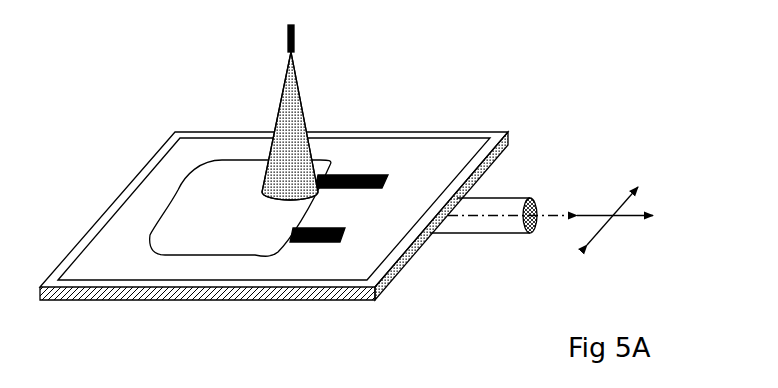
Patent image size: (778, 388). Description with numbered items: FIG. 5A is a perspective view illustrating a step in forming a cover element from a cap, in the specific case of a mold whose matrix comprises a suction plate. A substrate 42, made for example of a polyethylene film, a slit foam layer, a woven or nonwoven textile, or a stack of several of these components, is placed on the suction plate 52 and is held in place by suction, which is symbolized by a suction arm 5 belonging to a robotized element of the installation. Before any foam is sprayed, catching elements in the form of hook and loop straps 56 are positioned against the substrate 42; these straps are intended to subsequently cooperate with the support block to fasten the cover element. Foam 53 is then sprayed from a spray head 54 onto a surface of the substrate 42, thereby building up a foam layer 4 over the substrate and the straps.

The foam layer 4 is at (197, 240).
The suction arm 5 is at (477, 223).
The substrate 42 is at (453, 152).
The suction plate 52 is at (498, 157).
The foam 53 is at (292, 95).
The spray head 54 is at (295, 38).
The hook and loop straps 56 is at (348, 181).